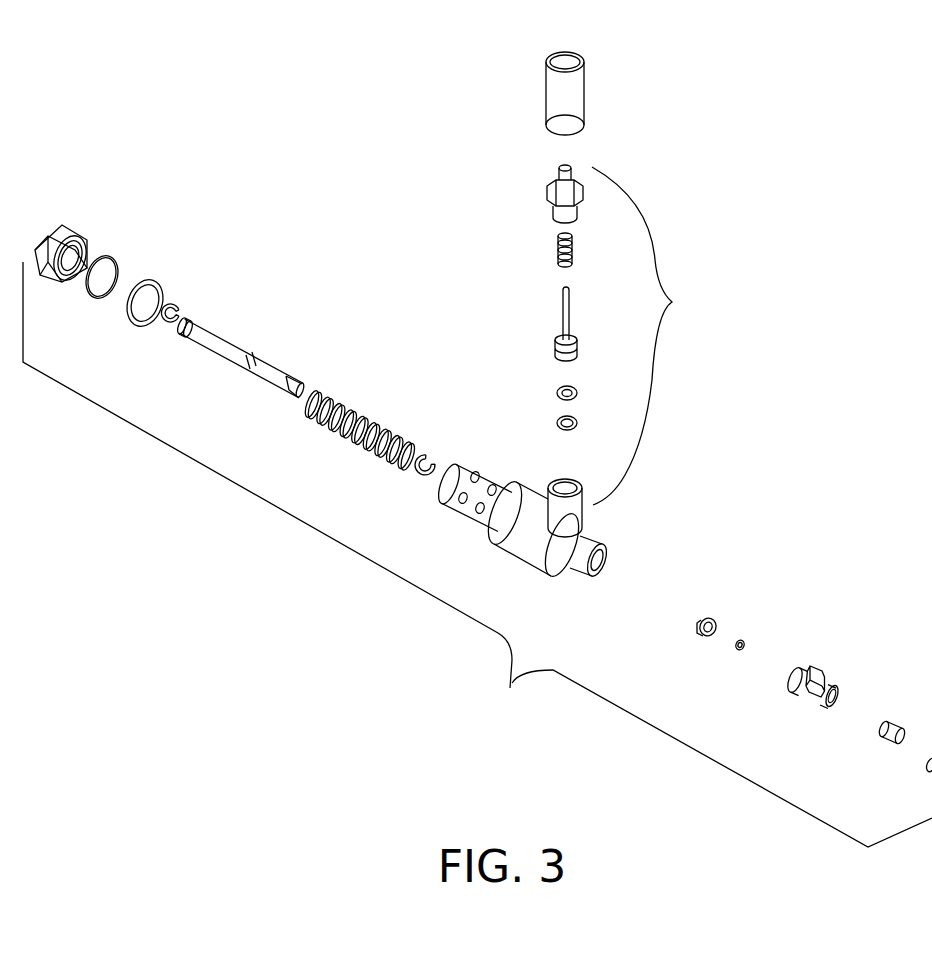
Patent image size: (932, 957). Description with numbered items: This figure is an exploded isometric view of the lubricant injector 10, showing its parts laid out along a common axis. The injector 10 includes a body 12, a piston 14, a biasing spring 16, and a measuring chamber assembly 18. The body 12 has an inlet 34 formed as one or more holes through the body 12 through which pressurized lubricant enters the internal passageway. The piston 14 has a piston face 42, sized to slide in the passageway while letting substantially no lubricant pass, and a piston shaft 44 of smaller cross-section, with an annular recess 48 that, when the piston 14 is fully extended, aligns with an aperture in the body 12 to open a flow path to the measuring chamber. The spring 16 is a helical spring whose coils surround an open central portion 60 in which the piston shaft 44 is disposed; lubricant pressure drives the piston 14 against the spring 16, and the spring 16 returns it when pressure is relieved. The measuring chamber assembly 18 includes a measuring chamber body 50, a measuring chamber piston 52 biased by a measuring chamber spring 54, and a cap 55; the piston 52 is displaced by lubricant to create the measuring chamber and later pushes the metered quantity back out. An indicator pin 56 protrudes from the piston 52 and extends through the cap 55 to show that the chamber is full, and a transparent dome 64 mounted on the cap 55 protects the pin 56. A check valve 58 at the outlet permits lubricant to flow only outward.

The lubricant injector 10 is at (477, 554).
The body 12 is at (522, 513).
The piston 14 is at (207, 372).
The biasing spring 16 is at (338, 427).
The measuring chamber assembly 18 is at (600, 277).
The inlet 34 is at (494, 487).
The piston face 42 is at (297, 397).
The piston shaft 44 is at (217, 351).
The annular recess 48 is at (257, 373).
The measuring chamber body 50 is at (576, 513).
The measuring chamber piston 52 is at (568, 315).
The measuring chamber spring 54 is at (555, 252).
The cap 55 is at (548, 190).
The indicator pin 56 is at (560, 294).
The check valve 58 is at (703, 640).
The open central portion 60 is at (418, 452).
The transparent dome 64 is at (587, 101).